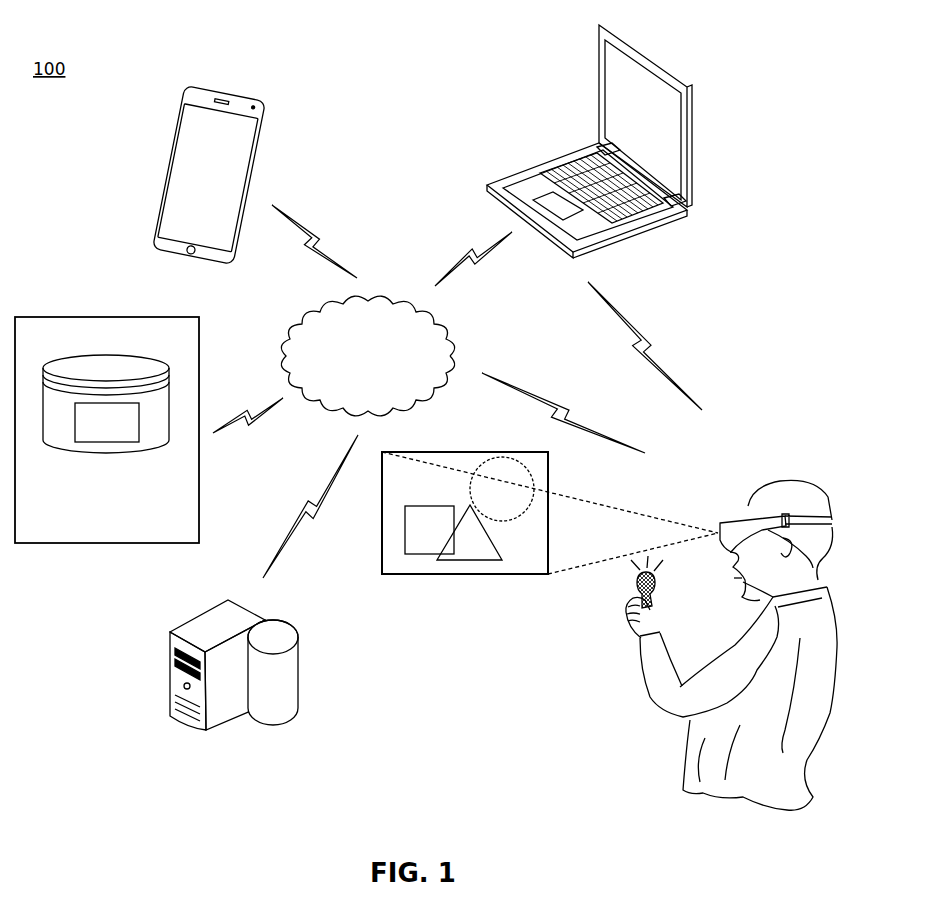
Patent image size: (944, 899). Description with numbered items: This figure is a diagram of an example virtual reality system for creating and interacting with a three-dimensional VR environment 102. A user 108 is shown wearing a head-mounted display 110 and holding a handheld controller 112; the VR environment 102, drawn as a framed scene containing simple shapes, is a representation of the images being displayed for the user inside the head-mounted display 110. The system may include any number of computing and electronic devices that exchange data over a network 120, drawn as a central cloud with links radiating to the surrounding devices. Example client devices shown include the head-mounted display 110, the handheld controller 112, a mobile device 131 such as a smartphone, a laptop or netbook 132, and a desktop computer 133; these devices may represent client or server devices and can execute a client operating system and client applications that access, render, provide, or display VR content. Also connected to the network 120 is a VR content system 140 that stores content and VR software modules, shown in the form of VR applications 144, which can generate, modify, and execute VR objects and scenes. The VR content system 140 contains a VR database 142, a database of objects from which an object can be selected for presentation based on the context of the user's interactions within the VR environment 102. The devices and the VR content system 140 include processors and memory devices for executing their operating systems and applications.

The VR environment 102 is at (508, 576).
The user 108 is at (683, 788).
The head-mounted display 110 is at (767, 522).
The handheld controller 112 is at (627, 590).
The network 120 is at (367, 356).
The mobile device 131 is at (247, 93).
The laptop or netbook 132 is at (512, 180).
The desktop computer 133 is at (206, 622).
The VR content system 140 is at (108, 430).
The VR database 142 is at (127, 365).
The VR applications 144 is at (107, 422).